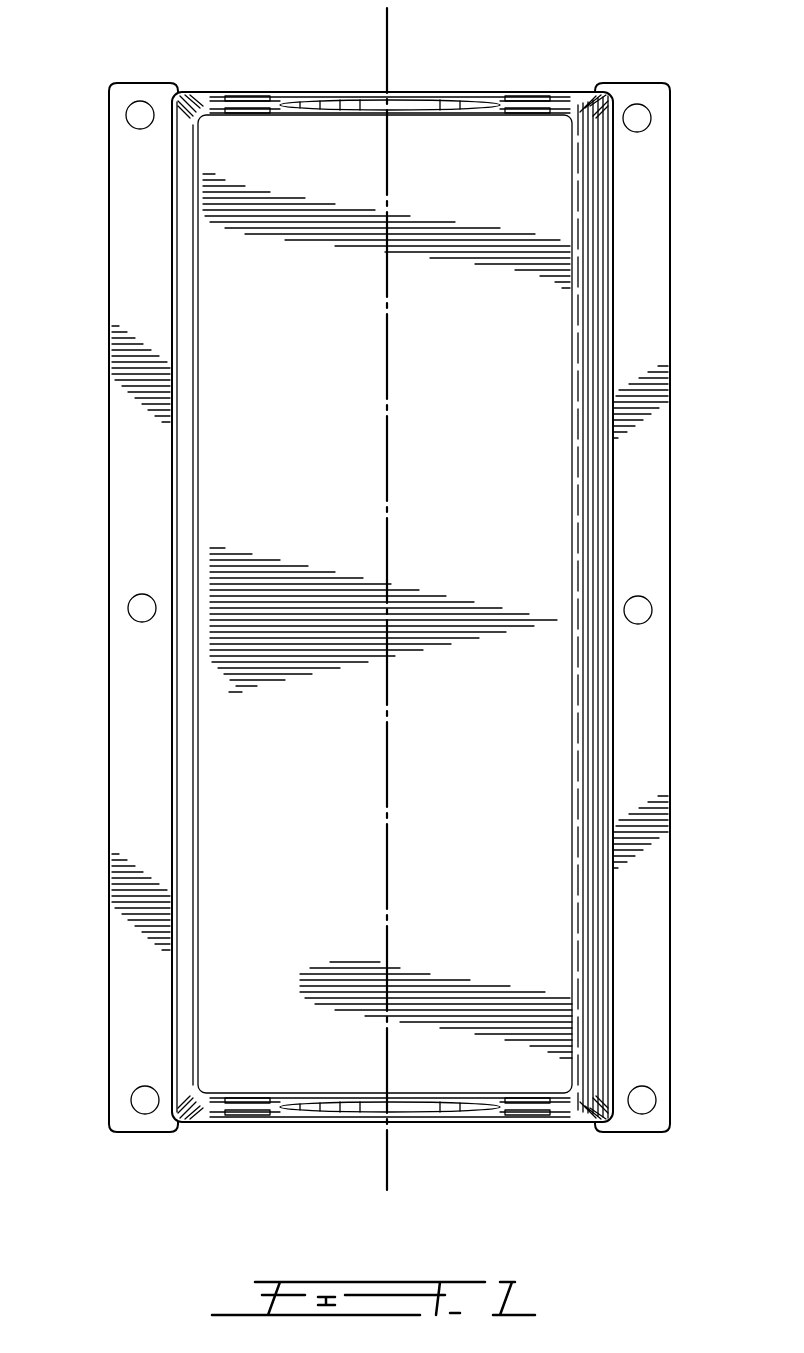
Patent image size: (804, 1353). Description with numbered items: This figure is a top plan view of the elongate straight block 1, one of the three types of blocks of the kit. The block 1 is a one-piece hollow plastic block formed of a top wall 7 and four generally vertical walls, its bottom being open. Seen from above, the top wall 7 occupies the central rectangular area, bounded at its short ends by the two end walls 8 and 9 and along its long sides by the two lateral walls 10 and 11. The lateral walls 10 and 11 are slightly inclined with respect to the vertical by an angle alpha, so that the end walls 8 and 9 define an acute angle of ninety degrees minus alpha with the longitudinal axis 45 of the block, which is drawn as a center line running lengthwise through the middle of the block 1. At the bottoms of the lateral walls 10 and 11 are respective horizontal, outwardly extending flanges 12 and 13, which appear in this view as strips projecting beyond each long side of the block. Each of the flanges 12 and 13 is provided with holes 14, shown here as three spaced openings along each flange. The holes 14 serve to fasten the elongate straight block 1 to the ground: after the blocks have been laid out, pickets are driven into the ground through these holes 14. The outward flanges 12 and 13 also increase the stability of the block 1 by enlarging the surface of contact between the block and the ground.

The elongate straight block 1 is at (684, 220).
The top wall 7 is at (300, 165).
The end wall 8 is at (215, 1110).
The end wall 9 is at (495, 100).
The lateral wall 10 is at (185, 910).
The lateral wall 11 is at (595, 830).
The flange 12 is at (130, 545).
The flange 13 is at (650, 537).
The holes 14 is at (140, 115).
The longitudinal axis 45 is at (388, 48).